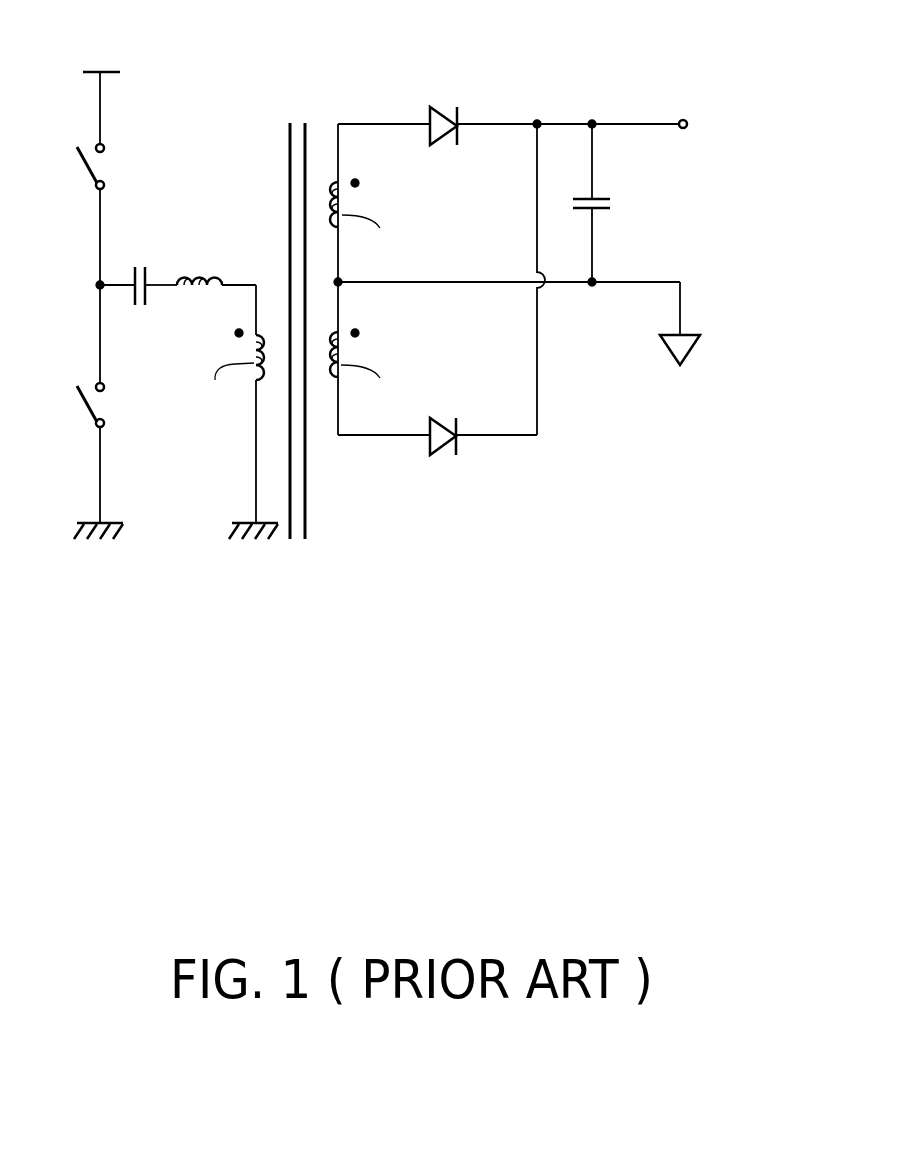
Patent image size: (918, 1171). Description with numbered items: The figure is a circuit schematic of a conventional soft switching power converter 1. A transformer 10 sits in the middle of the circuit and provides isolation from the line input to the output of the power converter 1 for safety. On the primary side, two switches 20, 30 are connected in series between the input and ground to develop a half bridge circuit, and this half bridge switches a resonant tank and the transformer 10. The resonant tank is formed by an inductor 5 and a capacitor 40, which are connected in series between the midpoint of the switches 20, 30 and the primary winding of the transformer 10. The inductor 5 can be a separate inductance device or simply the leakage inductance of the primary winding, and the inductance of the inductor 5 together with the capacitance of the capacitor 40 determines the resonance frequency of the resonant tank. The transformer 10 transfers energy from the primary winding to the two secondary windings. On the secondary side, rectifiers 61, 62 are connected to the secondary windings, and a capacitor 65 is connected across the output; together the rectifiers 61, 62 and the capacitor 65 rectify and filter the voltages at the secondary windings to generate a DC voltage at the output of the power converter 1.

The soft switching power converter 1 is at (785, 40).
The inductor 5 is at (196, 277).
The transformer 10 is at (285, 157).
The switch 20 is at (92, 147).
The switch 30 is at (92, 387).
The capacitor 40 is at (137, 267).
The rectifier 61 is at (445, 113).
The rectifier 62 is at (445, 450).
The capacitor 65 is at (613, 203).